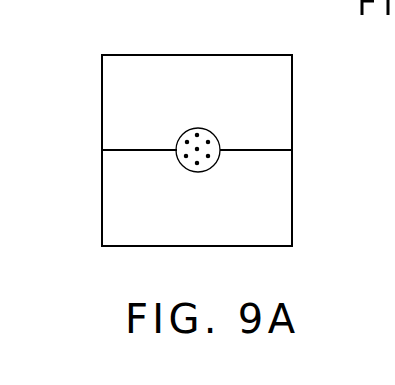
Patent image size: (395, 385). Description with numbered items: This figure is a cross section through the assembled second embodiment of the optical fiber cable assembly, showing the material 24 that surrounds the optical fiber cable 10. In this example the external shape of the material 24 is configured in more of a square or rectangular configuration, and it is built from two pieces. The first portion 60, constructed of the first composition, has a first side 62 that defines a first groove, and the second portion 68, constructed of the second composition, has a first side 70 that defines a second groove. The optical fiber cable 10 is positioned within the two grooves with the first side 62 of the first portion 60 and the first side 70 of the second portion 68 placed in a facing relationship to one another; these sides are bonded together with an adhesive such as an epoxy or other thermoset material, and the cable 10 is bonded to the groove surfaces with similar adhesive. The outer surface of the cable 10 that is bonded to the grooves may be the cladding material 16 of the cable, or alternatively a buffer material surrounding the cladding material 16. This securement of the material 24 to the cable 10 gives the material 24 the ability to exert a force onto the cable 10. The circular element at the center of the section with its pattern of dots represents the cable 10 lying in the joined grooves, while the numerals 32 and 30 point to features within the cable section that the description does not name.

The material 24 is at (135, 32).
The optical fiber cable 10 is at (176, 129).
The first side 62 is at (128, 149).
The first side 70 is at (143, 150).
The particle 32 is at (199, 136).
The first portion 60 is at (277, 102).
The center particle 30 is at (198, 149).
The cladding material 16 is at (208, 160).
The second portion 68 is at (252, 232).